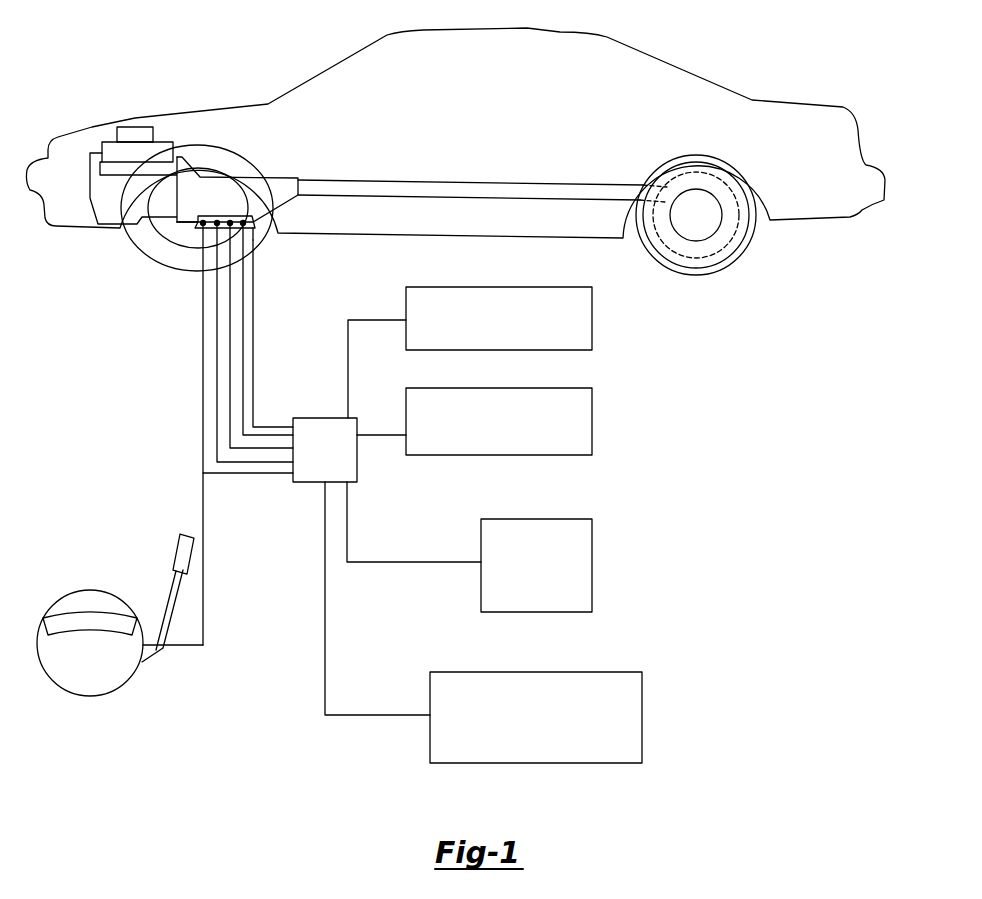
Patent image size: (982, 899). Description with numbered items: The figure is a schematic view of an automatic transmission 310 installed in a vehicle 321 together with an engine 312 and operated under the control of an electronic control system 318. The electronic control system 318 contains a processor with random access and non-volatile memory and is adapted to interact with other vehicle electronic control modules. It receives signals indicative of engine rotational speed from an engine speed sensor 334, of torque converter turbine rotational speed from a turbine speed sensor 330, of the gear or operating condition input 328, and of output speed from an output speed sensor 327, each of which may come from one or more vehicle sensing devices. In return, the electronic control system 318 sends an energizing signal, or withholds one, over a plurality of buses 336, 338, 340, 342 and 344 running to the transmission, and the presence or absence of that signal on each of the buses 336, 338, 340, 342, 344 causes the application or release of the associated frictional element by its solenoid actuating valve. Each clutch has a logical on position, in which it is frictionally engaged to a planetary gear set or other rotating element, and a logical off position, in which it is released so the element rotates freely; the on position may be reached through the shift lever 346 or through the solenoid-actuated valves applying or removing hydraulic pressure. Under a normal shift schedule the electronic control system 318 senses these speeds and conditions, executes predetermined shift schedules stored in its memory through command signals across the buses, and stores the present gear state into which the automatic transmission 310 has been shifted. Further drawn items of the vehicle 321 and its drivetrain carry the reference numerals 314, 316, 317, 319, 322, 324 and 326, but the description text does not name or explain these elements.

The automatic transmission 310 is at (277, 185).
The engine 312 is at (120, 152).
The transmission connector 314 is at (253, 222).
The drive shaft 316 is at (325, 185).
The rear wheel 317 is at (747, 247).
The electronic control system 318 is at (310, 482).
The differential 319 is at (703, 187).
The vehicle 321 is at (657, 58).
The connector pin 322 is at (203, 227).
The connector pin 324 is at (232, 227).
The connector wire 326 is at (253, 240).
The output speed sensor 327 is at (643, 717).
The gear or operating condition 328 is at (593, 322).
The turbine speed sensor 330 is at (593, 420).
The engine speed sensor 334 is at (593, 563).
The bus 336 is at (153, 135).
The bus 338 is at (142, 136).
The bus 340 is at (248, 463).
The bus 342 is at (223, 473).
The bus 344 is at (253, 327).
The shift lever 346 is at (95, 677).